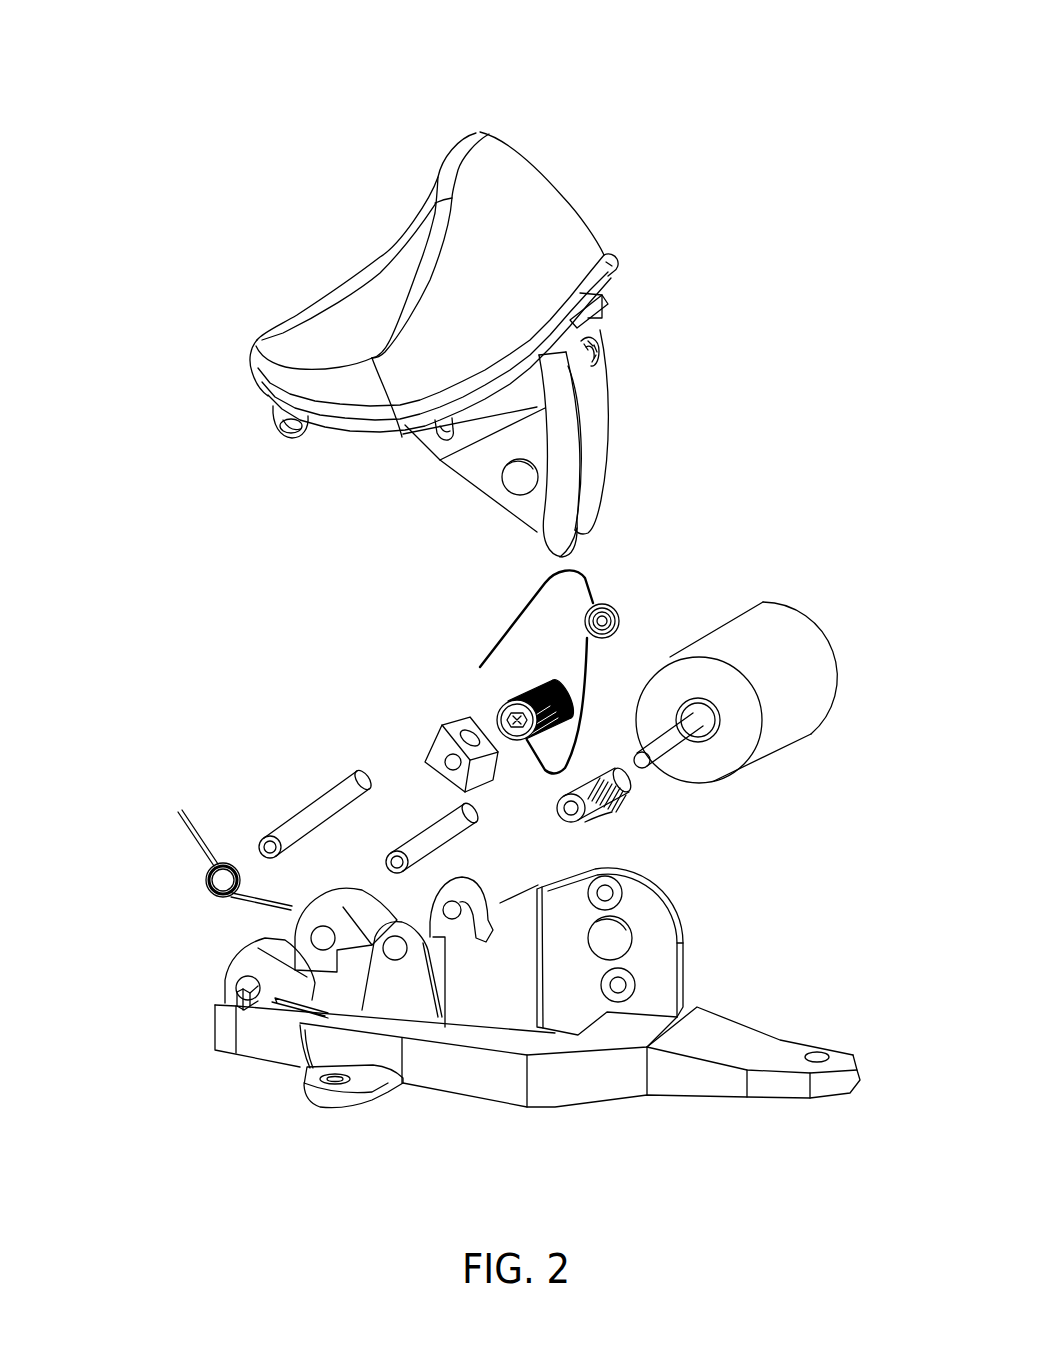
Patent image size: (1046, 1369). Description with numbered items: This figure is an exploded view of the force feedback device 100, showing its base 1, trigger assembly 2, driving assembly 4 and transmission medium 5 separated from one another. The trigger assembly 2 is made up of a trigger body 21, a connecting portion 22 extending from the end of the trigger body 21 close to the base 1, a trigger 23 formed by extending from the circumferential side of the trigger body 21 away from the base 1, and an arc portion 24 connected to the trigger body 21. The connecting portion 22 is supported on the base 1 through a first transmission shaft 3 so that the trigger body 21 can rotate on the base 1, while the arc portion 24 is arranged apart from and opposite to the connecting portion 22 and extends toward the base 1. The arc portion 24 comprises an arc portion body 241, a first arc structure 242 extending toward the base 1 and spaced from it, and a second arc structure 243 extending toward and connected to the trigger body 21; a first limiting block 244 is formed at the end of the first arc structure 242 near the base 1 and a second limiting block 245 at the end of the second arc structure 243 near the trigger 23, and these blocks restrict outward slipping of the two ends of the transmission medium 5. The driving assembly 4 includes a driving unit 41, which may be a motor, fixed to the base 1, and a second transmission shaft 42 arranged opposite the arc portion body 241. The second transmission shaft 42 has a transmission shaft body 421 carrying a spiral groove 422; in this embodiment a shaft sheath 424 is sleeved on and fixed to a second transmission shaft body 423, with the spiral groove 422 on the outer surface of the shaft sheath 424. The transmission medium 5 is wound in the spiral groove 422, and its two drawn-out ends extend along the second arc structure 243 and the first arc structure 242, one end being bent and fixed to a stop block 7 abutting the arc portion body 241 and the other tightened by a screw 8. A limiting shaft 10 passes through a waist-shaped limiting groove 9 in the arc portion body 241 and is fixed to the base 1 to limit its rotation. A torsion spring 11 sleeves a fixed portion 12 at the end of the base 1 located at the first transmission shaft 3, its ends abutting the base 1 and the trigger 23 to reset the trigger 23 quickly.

The force feedback device 100 is at (529, 17).
The base 1 is at (483, 1090).
The trigger assembly 2 is at (755, 185).
The trigger body 21 is at (618, 277).
The connecting portion 22 is at (310, 428).
The trigger 23 is at (542, 210).
The arc portion 24 is at (678, 317).
The arc portion body 241 is at (572, 400).
The first arc structure 242 is at (573, 530).
The second arc structure 243 is at (598, 352).
The first limiting block 244 is at (573, 547).
The second limiting block 245 is at (590, 330).
The first transmission shaft 3 is at (297, 823).
The driving assembly 4 is at (892, 760).
The driving unit 41 is at (783, 720).
The second transmission shaft 42 is at (840, 803).
The transmission shaft body 421 is at (667, 752).
The spiral groove 422 is at (597, 813).
The second transmission shaft body 423 is at (628, 788).
The shaft sheath 424 is at (612, 828).
The transmission medium 5 is at (517, 620).
The stop block 7 is at (440, 742).
The screw 8 is at (497, 712).
The limiting groove 9 is at (445, 440).
The limiting shaft 10 is at (440, 827).
The torsion spring 11 is at (205, 874).
The fixed portion 12 is at (236, 990).